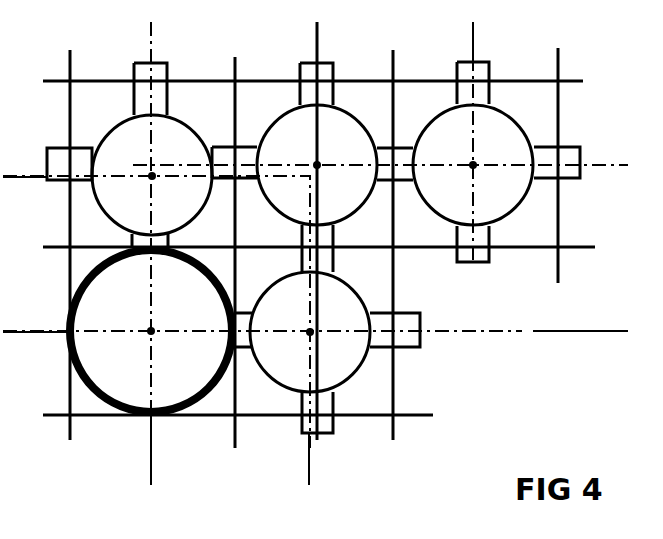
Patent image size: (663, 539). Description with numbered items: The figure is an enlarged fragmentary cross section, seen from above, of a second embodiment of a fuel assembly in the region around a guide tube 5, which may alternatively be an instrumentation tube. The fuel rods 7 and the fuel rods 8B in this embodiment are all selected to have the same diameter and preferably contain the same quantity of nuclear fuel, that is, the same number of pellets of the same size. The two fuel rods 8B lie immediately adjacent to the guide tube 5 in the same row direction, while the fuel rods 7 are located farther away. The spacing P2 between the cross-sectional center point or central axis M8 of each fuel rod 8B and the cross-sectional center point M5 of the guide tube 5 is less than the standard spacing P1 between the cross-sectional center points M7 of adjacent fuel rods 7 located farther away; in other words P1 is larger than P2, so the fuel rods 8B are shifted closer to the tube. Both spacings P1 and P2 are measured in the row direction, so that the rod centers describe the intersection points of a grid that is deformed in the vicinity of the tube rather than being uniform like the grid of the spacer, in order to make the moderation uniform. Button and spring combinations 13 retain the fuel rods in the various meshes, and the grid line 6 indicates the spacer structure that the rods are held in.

The guide tube 5 is at (80, 388).
The grid line / plate edge 6 is at (395, 288).
The fuel rod 7 is at (341, 121).
The fuel rod 8B is at (126, 131).
The button and spring combination 13 is at (479, 91).
The cross-sectional center point of the guide tube M5 is at (153, 334).
The cross-sectional center point of the fuel rod M7 is at (318, 167).
The central axis of the fuel rod M8 is at (152, 178).
The standard spacing P1 is at (473, 29).
The spacing P2 is at (12, 177).